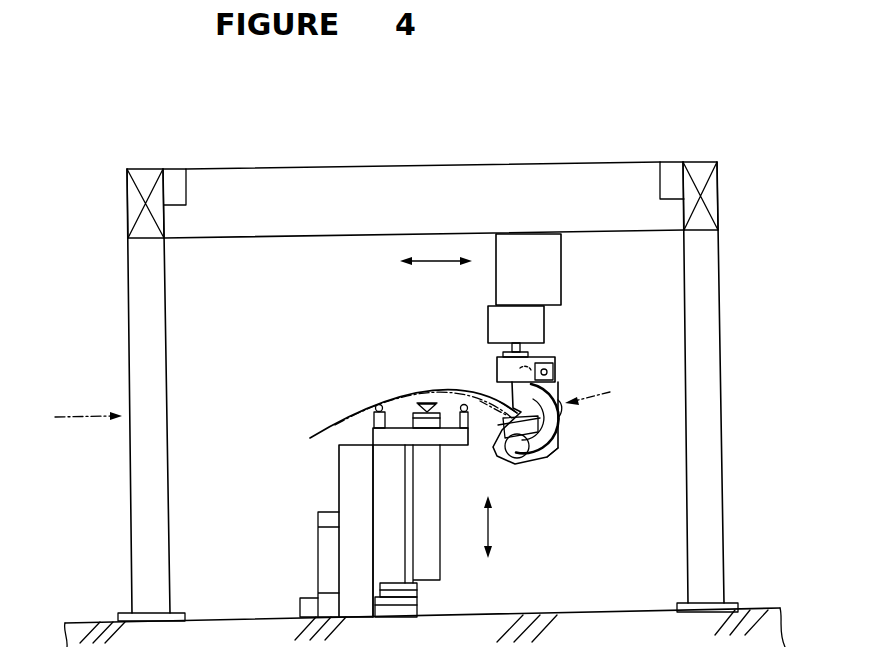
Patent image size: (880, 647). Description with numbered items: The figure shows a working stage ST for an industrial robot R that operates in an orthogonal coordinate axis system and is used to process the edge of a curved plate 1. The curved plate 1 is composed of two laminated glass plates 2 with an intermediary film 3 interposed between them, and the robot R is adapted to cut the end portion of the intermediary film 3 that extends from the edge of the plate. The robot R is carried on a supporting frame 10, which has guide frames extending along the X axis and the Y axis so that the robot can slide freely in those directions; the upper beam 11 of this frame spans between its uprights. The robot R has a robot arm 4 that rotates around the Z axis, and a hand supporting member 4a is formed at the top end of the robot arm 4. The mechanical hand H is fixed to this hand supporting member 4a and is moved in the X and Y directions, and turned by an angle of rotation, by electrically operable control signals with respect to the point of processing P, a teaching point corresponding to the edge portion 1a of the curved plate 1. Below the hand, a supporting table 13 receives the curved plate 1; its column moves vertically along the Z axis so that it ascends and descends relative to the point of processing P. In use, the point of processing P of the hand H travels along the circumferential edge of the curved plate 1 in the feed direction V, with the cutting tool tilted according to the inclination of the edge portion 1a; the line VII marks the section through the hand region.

The curved plate 1 is at (360, 402).
The edge portion 1a is at (500, 447).
The glass plates 2 is at (422, 393).
The intermediary film 3 is at (548, 462).
The robot arm 4 is at (518, 342).
The hand supporting member 4a is at (529, 355).
The supporting frame 10 is at (708, 194).
The cross beam 11 is at (432, 175).
The supporting table 13 is at (331, 465).
The industrial robot R is at (570, 287).
The point of processing P is at (553, 424).
The mechanical hand H is at (560, 454).
The working stage ST is at (212, 538).
The section view line VII is at (602, 392).
The X axis X is at (436, 277).
The Z axis Z is at (499, 527).
The feed direction V is at (88, 404).